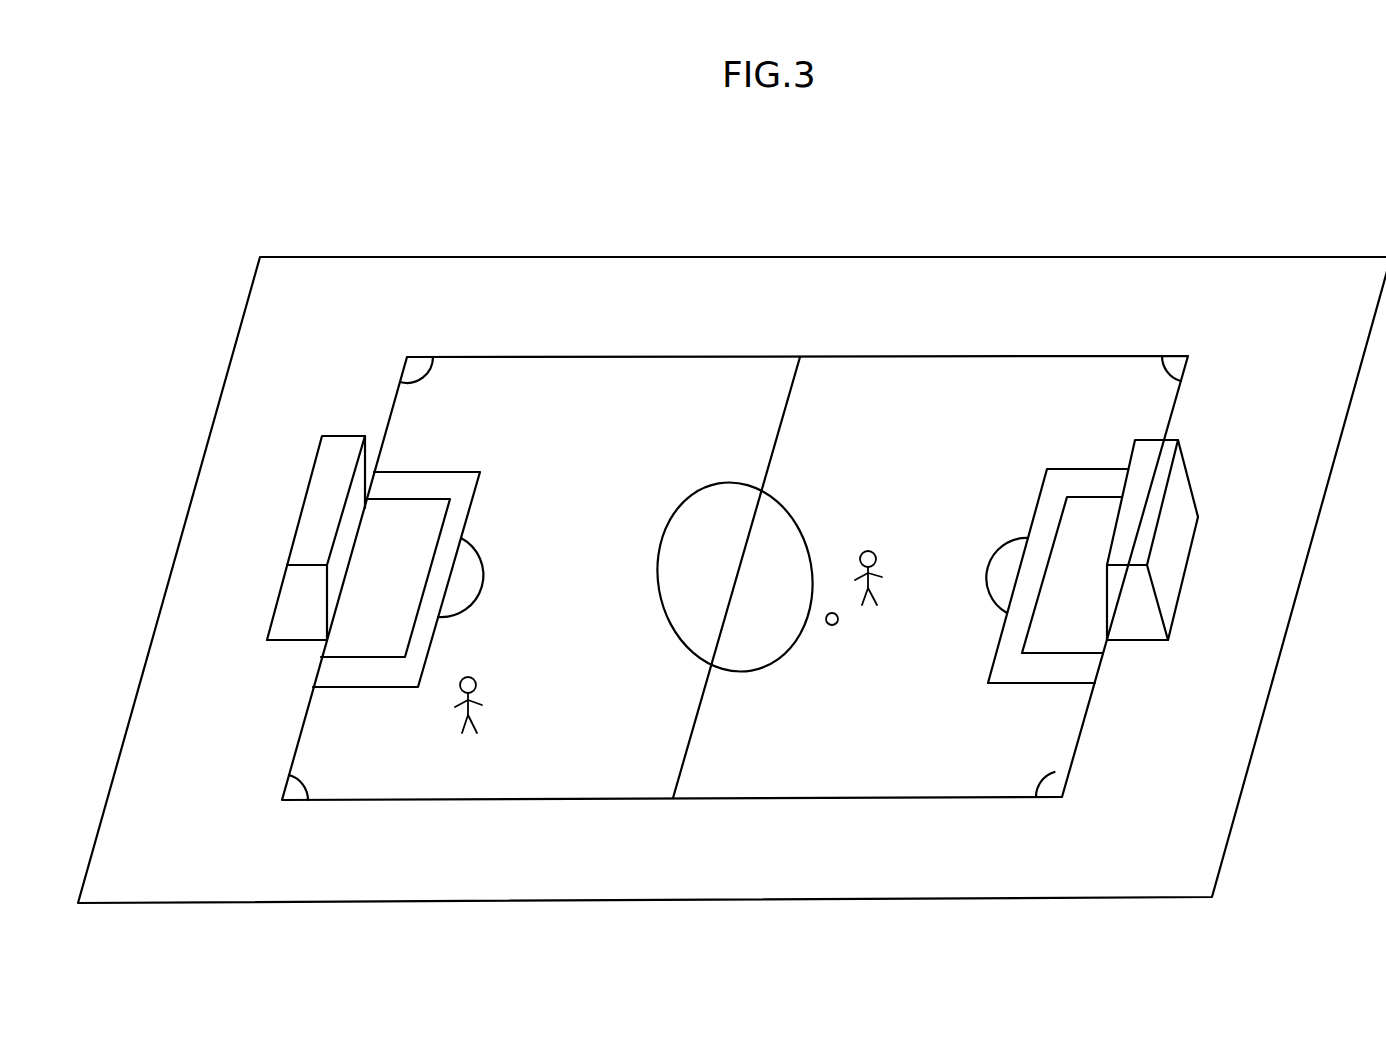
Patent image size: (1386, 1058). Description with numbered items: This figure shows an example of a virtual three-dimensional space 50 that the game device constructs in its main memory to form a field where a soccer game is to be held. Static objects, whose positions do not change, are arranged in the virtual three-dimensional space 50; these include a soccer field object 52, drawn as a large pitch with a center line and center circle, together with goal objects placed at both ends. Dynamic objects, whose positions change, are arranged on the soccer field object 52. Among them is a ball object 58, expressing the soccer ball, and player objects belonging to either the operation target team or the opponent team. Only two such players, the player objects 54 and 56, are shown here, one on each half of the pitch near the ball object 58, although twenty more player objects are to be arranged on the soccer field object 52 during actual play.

The virtual three-dimensional space 50 is at (629, 215).
The soccer field object 52 is at (818, 322).
The player object 54 is at (873, 580).
The player object 56 is at (472, 710).
The ball object 58 is at (840, 621).